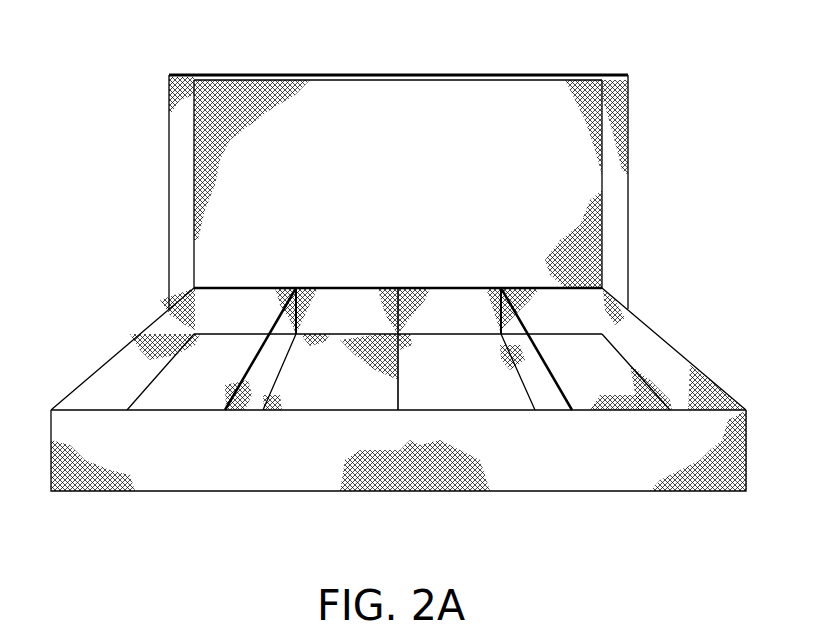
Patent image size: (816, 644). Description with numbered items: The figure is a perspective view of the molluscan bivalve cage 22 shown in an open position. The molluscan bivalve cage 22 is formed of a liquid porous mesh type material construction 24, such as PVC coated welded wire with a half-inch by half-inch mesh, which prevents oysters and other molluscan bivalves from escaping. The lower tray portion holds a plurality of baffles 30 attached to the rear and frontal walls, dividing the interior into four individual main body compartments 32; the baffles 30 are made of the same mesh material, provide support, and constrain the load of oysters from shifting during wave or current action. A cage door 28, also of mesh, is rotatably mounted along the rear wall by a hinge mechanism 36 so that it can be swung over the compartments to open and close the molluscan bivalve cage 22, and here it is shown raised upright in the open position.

The molluscan bivalve cage 22 is at (662, 314).
The mesh type material construction 24 is at (92, 493).
The cage door 28 is at (560, 75).
The baffles 30 is at (397, 383).
The main body compartments 32 is at (222, 384).
The hinge mechanism 36 is at (440, 287).